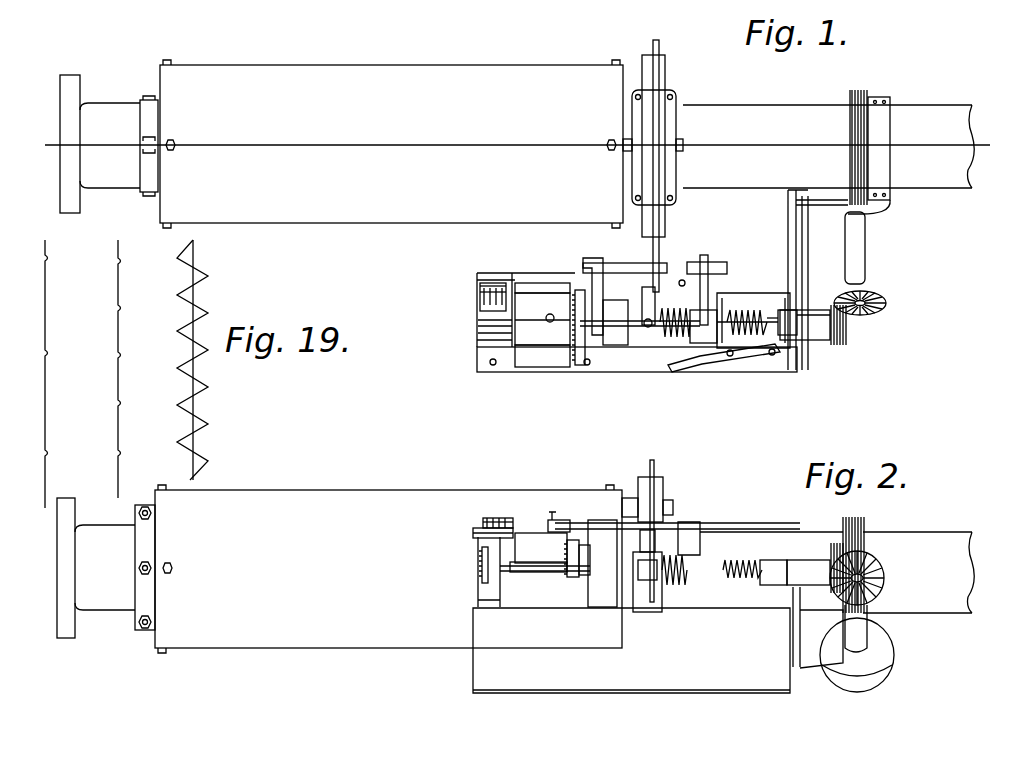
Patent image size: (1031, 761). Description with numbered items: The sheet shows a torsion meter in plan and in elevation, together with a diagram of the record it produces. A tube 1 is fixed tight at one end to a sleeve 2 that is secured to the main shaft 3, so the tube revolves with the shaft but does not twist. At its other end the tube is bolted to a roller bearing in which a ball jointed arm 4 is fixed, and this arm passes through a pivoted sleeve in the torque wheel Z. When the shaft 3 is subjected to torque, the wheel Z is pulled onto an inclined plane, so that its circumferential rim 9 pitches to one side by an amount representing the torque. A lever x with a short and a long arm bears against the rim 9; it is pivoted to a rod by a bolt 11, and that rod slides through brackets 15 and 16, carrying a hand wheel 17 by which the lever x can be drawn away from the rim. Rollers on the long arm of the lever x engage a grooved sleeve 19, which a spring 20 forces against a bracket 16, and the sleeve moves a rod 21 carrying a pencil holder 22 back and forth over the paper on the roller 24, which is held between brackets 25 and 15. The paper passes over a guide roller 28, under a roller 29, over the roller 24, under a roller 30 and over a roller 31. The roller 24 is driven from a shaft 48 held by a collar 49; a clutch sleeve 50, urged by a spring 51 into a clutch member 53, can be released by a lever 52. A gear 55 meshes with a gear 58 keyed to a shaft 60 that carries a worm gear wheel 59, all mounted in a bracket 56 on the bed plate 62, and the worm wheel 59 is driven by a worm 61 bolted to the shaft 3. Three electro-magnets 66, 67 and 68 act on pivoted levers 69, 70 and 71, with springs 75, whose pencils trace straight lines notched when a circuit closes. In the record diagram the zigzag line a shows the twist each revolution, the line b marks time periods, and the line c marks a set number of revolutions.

In FIG. 1, the tube 1 is at (222, 64).
In FIG. 2, the tube 1 is at (250, 490).
In FIG. 1, the sleeve 2 is at (142, 99).
In FIG. 2, the sleeve 2 is at (138, 505).
In FIG. 1, the shaft 3 is at (78, 75).
In FIG. 2, the shaft 3 is at (73, 505).
In FIG. 1, the ball jointed arm 4 is at (700, 134).
In FIG. 2, the ball jointed arm 4 is at (674, 508).
In FIG. 1, the circumferential rim 9 is at (661, 44).
In FIG. 2, the circumferential rim 9 is at (655, 472).
In FIG. 1, the wheel Z is at (668, 62).
In FIG. 1, the bolt 11 is at (640, 272).
In FIG. 2, the bracket 15 is at (602, 594).
In FIG. 1, the bracket 16 is at (690, 290).
In FIG. 2, the bracket 16 is at (690, 612).
In FIG. 1, the hand wheel 17 is at (710, 292).
In FIG. 1, the sleeve 19 is at (630, 346).
In FIG. 2, the sleeve 19 is at (628, 612).
In FIG. 1, the spring 20 is at (668, 340).
In FIG. 2, the spring 20 is at (673, 591).
In FIG. 1, the rod 21 is at (602, 330).
In FIG. 2, the rod 21 is at (600, 507).
In FIG. 1, the pencil holder 22 is at (552, 330).
In FIG. 2, the pencil holder 22 is at (550, 520).
In FIG. 1, the roller 24 is at (592, 262).
In FIG. 2, the roller 24 is at (538, 533).
In FIG. 2, the bracket 25 is at (490, 598).
In FIG. 1, the guide roller 28 is at (520, 283).
In FIG. 1, the roller 29 is at (540, 300).
In FIG. 1, the roller 30 is at (526, 350).
In FIG. 1, the roller 31 is at (537, 367).
In FIG. 2, the roller 31 is at (528, 572).
In FIG. 1, the shaft 48 is at (775, 318).
In FIG. 2, the shaft 48 is at (545, 572).
In FIG. 1, the collar 49 is at (738, 310).
In FIG. 1, the clutch sleeve 50 is at (790, 345).
In FIG. 2, the clutch sleeve 50 is at (775, 560).
In FIG. 1, the spring 51 is at (745, 312).
In FIG. 2, the spring 51 is at (738, 562).
In FIG. 1, the lever 52 is at (705, 371).
In FIG. 2, the lever 52 is at (693, 588).
In FIG. 1, the clutch member 53 is at (800, 345).
In FIG. 2, the clutch member 53 is at (800, 562).
In FIG. 1, the gear 55 is at (846, 338).
In FIG. 2, the gear 55 is at (835, 545).
In FIG. 1, the bracket 56 is at (815, 342).
In FIG. 2, the bracket 56 is at (818, 630).
In FIG. 1, the gear 58 is at (880, 297).
In FIG. 2, the gear 58 is at (880, 580).
In FIG. 1, the worm gear wheel 59 is at (896, 208).
In FIG. 2, the worm gear wheel 59 is at (895, 665).
In FIG. 1, the shaft 60 is at (866, 250).
In FIG. 2, the shaft 60 is at (870, 626).
In FIG. 1, the worm 61 is at (862, 92).
In FIG. 2, the worm 61 is at (862, 521).
In FIG. 1, the bed plate 62 is at (482, 370).
In FIG. 1, the electro-magnet 66 is at (478, 300).
In FIG. 2, the electro-magnet 66 is at (475, 534).
In FIG. 1, the electro-magnet 67 is at (481, 290).
In FIG. 2, the electro-magnet 67 is at (483, 528).
In FIG. 1, the electro-magnet 68 is at (490, 284).
In FIG. 2, the electro-magnet 68 is at (495, 520).
In FIG. 1, the lever 69 is at (530, 350).
In FIG. 1, the lever 70 is at (520, 345).
In FIG. 1, the lever 71 is at (510, 340).
In FIG. 1, the springs 75 is at (480, 333).
In FIG. 1, the lever x is at (670, 280).
In FIG. 19, the zigzag line a is at (192, 351).
In FIG. 19, the line b is at (117, 359).
In FIG. 19, the line c is at (43, 364).